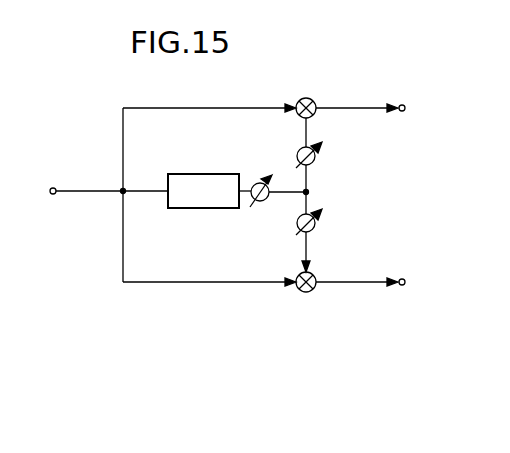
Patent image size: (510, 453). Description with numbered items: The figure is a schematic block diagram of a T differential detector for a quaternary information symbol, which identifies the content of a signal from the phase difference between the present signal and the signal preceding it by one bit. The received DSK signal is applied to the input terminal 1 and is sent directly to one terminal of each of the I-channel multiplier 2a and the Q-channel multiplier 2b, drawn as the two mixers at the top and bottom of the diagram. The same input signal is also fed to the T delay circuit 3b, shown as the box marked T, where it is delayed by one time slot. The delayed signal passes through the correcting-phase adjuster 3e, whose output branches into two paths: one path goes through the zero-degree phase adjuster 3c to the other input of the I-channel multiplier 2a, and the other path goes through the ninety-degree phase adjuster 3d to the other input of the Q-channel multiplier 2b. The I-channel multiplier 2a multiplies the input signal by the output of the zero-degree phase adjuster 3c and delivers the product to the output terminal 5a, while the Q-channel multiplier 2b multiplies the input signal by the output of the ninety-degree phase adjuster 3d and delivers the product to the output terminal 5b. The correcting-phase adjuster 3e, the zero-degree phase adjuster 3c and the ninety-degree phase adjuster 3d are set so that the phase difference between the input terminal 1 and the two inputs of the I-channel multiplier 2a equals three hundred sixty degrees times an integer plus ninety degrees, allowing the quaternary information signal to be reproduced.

The input terminal 1 is at (50, 197).
The I_CH multiplier 2a is at (305, 97).
The Q_CH multiplier 2b is at (306, 295).
The T delay circuit 3b is at (204, 208).
The 0° phase adjuster 3c is at (315, 163).
The 90° phase adjuster 3d is at (313, 232).
The correcting-phase adjuster 3e is at (260, 203).
The output terminal 5a is at (376, 101).
The output terminal 5b is at (376, 297).